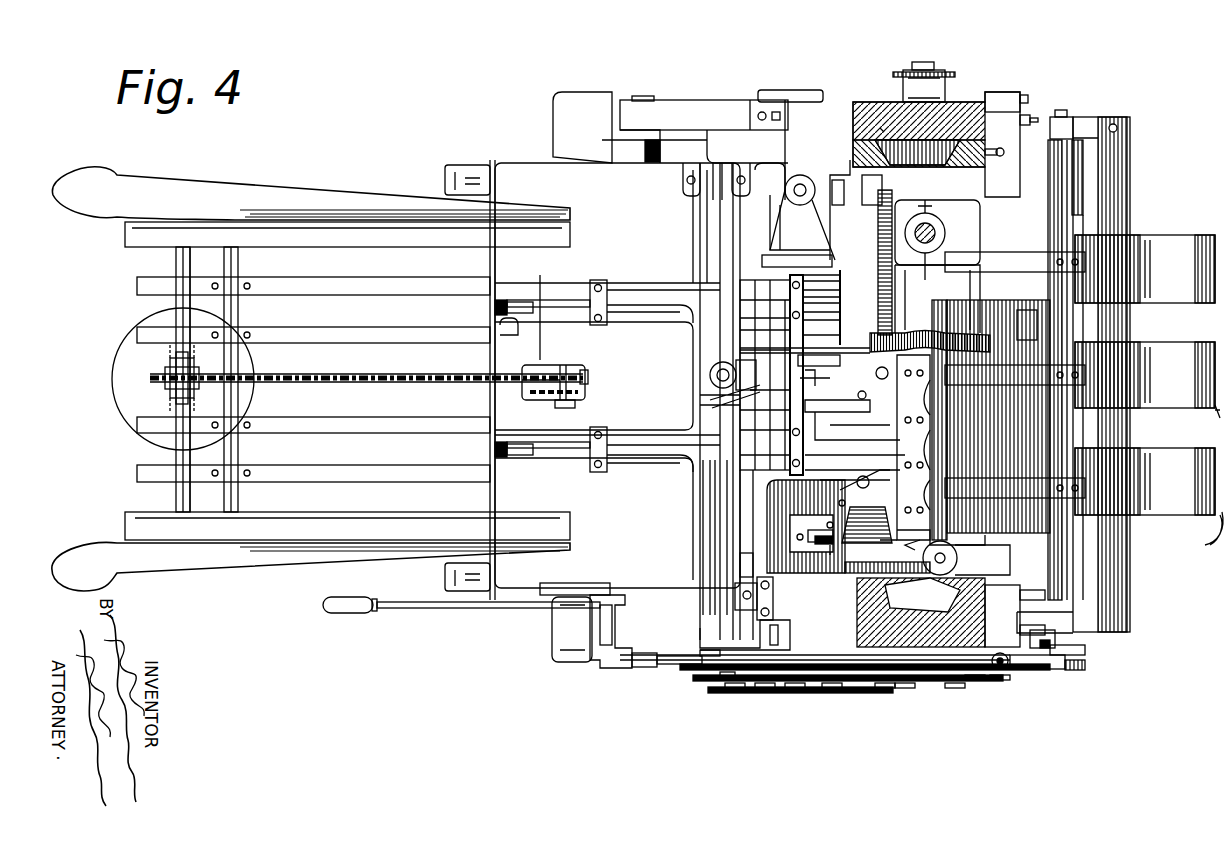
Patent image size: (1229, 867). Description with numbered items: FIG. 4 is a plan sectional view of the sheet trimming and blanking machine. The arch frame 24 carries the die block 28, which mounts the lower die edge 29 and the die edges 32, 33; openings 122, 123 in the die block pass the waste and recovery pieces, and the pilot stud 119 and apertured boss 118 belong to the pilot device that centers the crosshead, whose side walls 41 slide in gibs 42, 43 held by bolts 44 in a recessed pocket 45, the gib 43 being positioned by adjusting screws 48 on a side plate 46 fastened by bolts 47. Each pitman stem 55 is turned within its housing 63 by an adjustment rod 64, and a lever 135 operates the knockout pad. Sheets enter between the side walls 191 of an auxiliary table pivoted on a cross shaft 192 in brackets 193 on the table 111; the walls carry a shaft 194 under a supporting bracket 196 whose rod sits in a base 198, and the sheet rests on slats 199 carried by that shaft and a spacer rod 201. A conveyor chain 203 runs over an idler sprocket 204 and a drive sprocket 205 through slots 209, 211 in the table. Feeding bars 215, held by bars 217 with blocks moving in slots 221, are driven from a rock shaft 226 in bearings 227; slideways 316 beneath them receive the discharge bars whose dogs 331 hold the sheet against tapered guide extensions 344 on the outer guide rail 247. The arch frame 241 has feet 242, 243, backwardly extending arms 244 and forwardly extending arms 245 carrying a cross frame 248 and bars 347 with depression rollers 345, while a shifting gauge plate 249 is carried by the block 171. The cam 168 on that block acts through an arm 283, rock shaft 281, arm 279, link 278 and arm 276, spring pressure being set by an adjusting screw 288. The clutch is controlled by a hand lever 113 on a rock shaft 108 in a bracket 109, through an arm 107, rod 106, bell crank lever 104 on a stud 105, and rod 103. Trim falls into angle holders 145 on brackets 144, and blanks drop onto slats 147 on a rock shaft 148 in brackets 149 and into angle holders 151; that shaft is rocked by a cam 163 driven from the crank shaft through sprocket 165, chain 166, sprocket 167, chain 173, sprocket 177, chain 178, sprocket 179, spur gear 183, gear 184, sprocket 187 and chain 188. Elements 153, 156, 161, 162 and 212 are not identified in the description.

The arch frame 24 is at (866, 134).
The die block 28 is at (852, 604).
The lower die edge 29 is at (932, 392).
The die edges 32 is at (893, 512).
The die edges 33 is at (818, 532).
The side walls 41 is at (906, 148).
The gib 42 is at (856, 115).
The gib 43 is at (975, 118).
The bolts 44 is at (858, 152).
The recessed pocket 45 is at (882, 130).
The side plate 46 is at (992, 120).
The bolts 47 is at (1005, 128).
The adjusting screws 48 is at (1005, 153).
The pitman stem 55 is at (948, 234).
The housing 63 is at (940, 210).
The adjustment rod 64 is at (954, 312).
The rod 103 is at (1010, 672).
The bell crank lever 104 is at (976, 680).
The stud 105 is at (955, 690).
The rod 106 is at (792, 693).
The arm 107 is at (600, 664).
The rock shaft 108 is at (640, 672).
The bracket 109 is at (612, 634).
The table 111 is at (522, 573).
The hand lever 113 is at (340, 614).
The apertured boss 118 is at (805, 176).
The pilot stud 119 is at (955, 560).
The opening 122 is at (832, 548).
The opening 123 is at (870, 530).
The lever 135 is at (840, 176).
The brackets 144 is at (1095, 122).
The angle holders 145 is at (1210, 528).
The slats 147 is at (1030, 385).
The rock shaft 148 is at (1068, 168).
The brackets 149 is at (1075, 122).
The angle holders 151 is at (1165, 245).
The pin 153 is at (1060, 312).
The roller end 156 is at (1212, 416).
The plate 161 is at (1075, 656).
The block 162 is at (1058, 647).
The cam 163 is at (1073, 672).
The sprocket 165 is at (1050, 672).
The chain 166 is at (1000, 682).
The sprocket 167 is at (702, 680).
The cam 168 is at (675, 666).
The block 171 is at (745, 560).
The chain 173 is at (815, 694).
The sprocket 177 is at (732, 693).
The chain 178 is at (765, 693).
The sprocket 179 is at (885, 694).
The spur gear 183 is at (830, 694).
The gear 184 is at (905, 694).
The sprocket 187 is at (912, 80).
The chain 188 is at (950, 73).
The side walls 191 is at (268, 198).
The cross shaft 192 is at (455, 401).
The brackets 193 is at (455, 178).
The shaft 194 is at (178, 497).
The supporting bracket 196 is at (172, 409).
The base 198 is at (133, 347).
The slats 199 is at (402, 322).
The spacer rod 201 is at (238, 268).
The conveyor chain 203 is at (320, 376).
The idler sprocket 204 is at (158, 375).
The drive sprocket 205 is at (564, 366).
The slot 209 is at (508, 370).
The slot 211 is at (590, 375).
The block 212 is at (560, 402).
The feeding bars 215 is at (566, 312).
The bar 217 is at (534, 288).
The slot 221 is at (524, 442).
The rock shaft 226 is at (644, 98).
The bearings 227 is at (640, 112).
The frame 241 is at (705, 208).
The foot 242 is at (736, 590).
The foot 243 is at (683, 170).
The arms 244 is at (668, 266).
The arms 245 is at (750, 332).
The outer guide rail 247 is at (828, 270).
The cross frame 248 is at (812, 368).
The shifting gauge plate 249 is at (742, 503).
The arm 276 is at (822, 376).
The link 278 is at (722, 370).
The arm 279 is at (702, 396).
The rock shaft 281 is at (706, 515).
The arm 283 is at (705, 646).
The adjusting screw 288 is at (714, 378).
The slideways 316 is at (500, 307).
The dog 331 is at (900, 437).
The tapered guide extensions 344 is at (900, 460).
The depression rollers 345 is at (925, 410).
The bars 347 is at (868, 404).